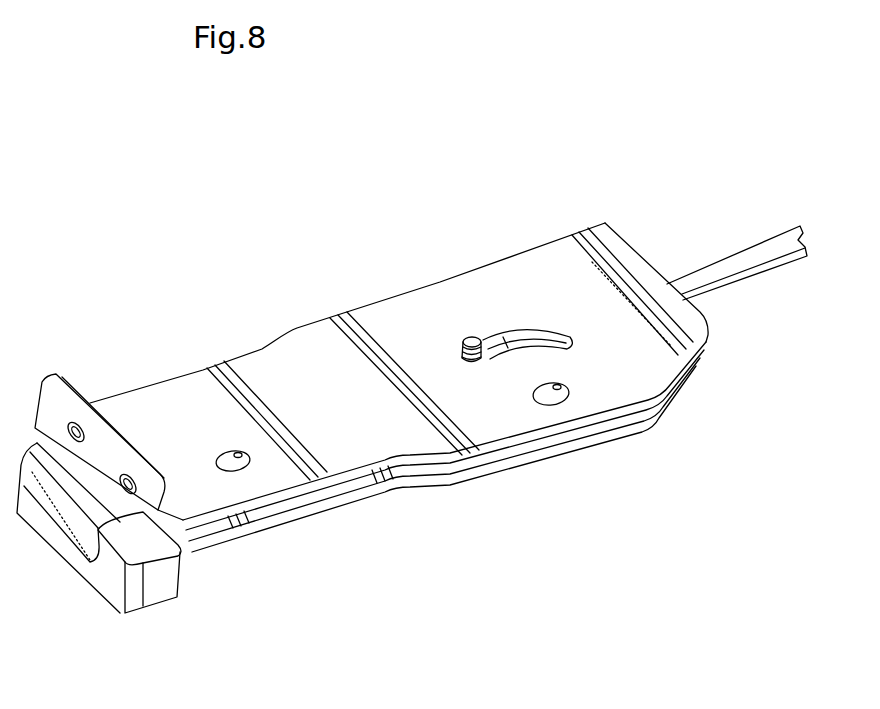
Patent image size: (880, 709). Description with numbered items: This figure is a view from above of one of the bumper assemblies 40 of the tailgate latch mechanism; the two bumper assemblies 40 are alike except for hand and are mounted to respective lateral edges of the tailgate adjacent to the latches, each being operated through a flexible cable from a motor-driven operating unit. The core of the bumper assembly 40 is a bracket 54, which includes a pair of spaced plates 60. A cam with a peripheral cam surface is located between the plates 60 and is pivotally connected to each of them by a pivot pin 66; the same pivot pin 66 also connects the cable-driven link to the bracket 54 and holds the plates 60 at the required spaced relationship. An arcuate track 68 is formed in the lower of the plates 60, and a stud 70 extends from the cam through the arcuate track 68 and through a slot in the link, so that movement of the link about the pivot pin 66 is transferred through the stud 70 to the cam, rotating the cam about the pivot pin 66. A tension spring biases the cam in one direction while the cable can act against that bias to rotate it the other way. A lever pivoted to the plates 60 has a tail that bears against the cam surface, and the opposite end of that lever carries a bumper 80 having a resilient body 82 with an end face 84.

The bumper assembly 40 is at (443, 228).
The bracket 54 is at (297, 328).
The spaced plates 60 is at (362, 460).
The pivot pin 66 is at (565, 403).
The arcuate track 68 is at (543, 326).
The stud 70 is at (461, 337).
The bumper 80 is at (58, 568).
The resilient body 82 is at (107, 586).
The end face 84 is at (163, 588).